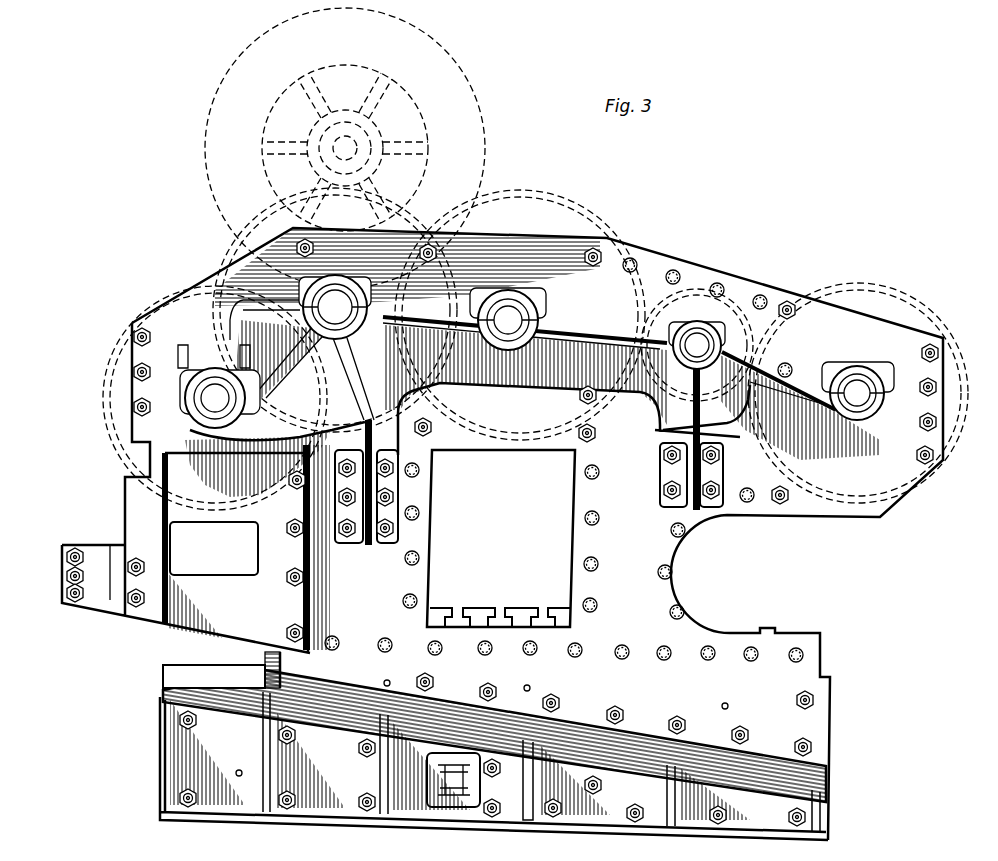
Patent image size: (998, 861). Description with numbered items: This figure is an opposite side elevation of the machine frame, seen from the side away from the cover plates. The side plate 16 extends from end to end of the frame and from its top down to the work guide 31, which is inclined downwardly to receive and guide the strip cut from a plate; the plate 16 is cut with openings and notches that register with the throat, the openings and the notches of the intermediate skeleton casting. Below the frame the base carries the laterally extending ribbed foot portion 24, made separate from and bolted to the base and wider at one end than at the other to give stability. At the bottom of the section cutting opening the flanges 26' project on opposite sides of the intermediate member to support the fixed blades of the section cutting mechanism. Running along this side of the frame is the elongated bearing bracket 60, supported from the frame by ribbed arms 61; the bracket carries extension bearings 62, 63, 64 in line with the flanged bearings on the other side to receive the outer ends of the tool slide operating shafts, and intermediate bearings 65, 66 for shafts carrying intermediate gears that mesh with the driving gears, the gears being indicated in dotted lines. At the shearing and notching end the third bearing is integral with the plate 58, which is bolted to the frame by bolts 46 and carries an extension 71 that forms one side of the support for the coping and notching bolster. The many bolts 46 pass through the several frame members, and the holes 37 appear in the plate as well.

The side plate 16 is at (428, 582).
The ribbed foot portion 24 is at (326, 812).
The flanges 26' is at (500, 607).
The work guide 31 is at (180, 698).
The bolt holes 37 is at (380, 642).
The bolts 46 is at (795, 314).
The plate 58 is at (205, 618).
The elongated bearing bracket 60 is at (545, 368).
The ribbed arms 61 is at (430, 430).
The extension bearing 62 is at (852, 402).
The extension bearing 63 is at (505, 338).
The extension bearing 64 is at (222, 405).
The intermediate bearing 65 is at (699, 338).
The intermediate bearing 66 is at (375, 296).
The extension 71 is at (92, 600).